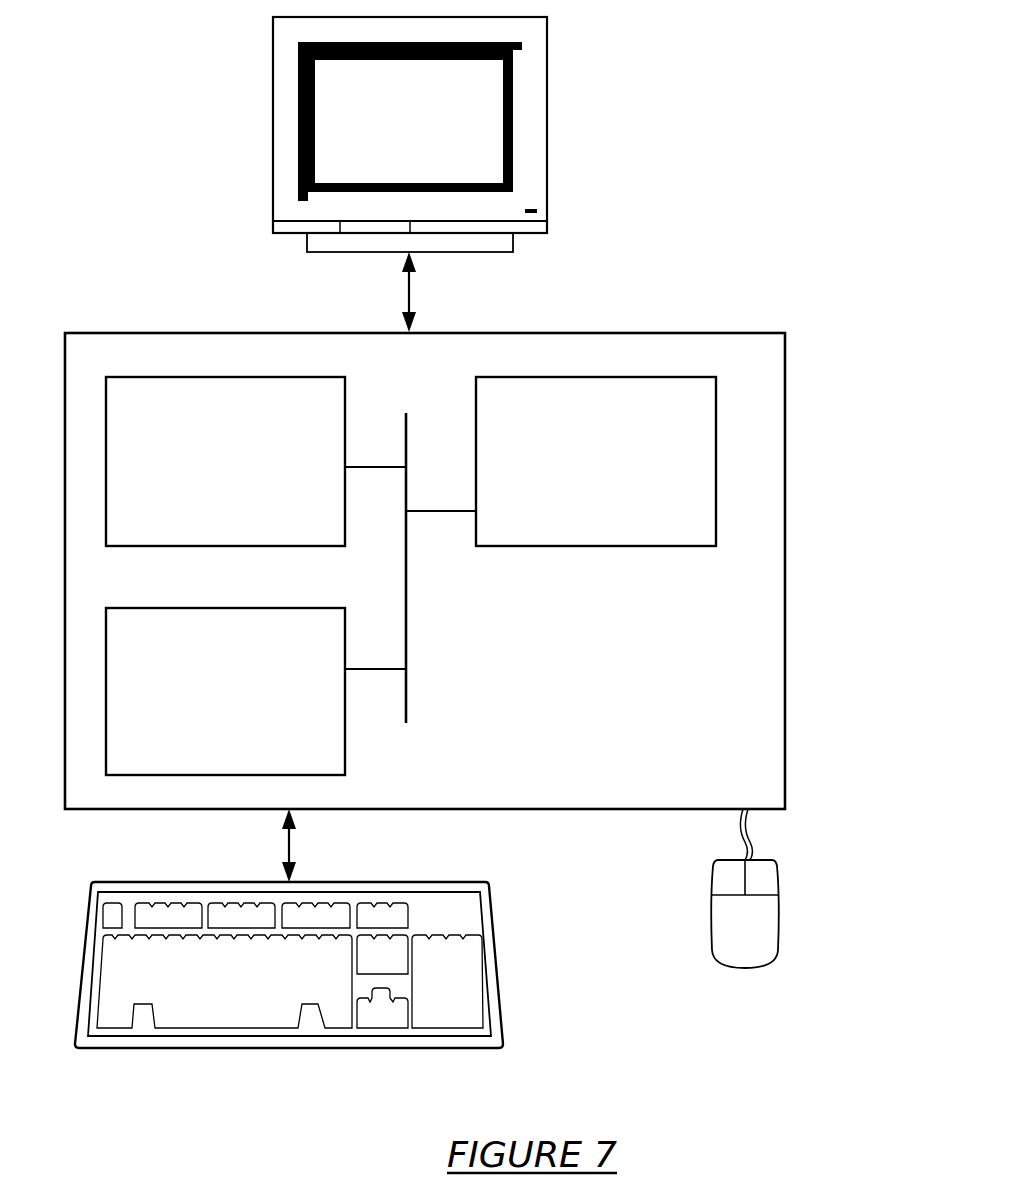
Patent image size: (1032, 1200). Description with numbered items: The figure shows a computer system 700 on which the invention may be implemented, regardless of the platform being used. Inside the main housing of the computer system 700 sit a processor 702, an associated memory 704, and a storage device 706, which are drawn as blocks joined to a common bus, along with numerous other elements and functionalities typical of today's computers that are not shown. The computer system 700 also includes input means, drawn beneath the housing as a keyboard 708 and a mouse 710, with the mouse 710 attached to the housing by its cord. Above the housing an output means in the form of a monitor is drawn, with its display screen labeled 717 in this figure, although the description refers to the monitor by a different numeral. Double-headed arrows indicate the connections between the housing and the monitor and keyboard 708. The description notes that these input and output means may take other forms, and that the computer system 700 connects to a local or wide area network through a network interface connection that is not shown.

The computer system 700 is at (803, 182).
The display monitor 717 is at (431, 137).
The processor 702 is at (624, 471).
The memory 704 is at (249, 473).
The storage device 706 is at (244, 707).
The keyboard 708 is at (239, 1007).
The mouse 710 is at (769, 942).